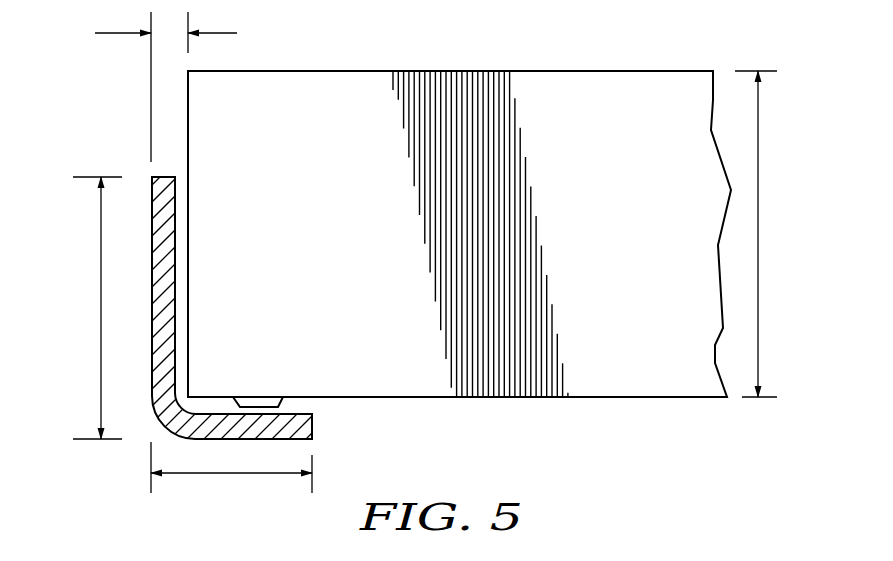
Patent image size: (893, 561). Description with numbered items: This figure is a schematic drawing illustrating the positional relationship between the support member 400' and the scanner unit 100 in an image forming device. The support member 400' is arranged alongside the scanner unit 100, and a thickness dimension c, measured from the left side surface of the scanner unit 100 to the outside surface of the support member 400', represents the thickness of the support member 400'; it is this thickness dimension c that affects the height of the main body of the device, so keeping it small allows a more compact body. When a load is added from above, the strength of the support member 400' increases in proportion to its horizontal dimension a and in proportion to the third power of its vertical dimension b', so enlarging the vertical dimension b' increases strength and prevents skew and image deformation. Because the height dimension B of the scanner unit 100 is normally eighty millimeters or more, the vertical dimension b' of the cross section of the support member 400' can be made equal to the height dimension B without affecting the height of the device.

The scanner unit 100 is at (475, 70).
The support member 400' is at (287, 307).
The thickness dimension c is at (166, 87).
The vertical dimension b' is at (97, 308).
The horizontal dimension a is at (231, 472).
The height dimension B is at (758, 234).